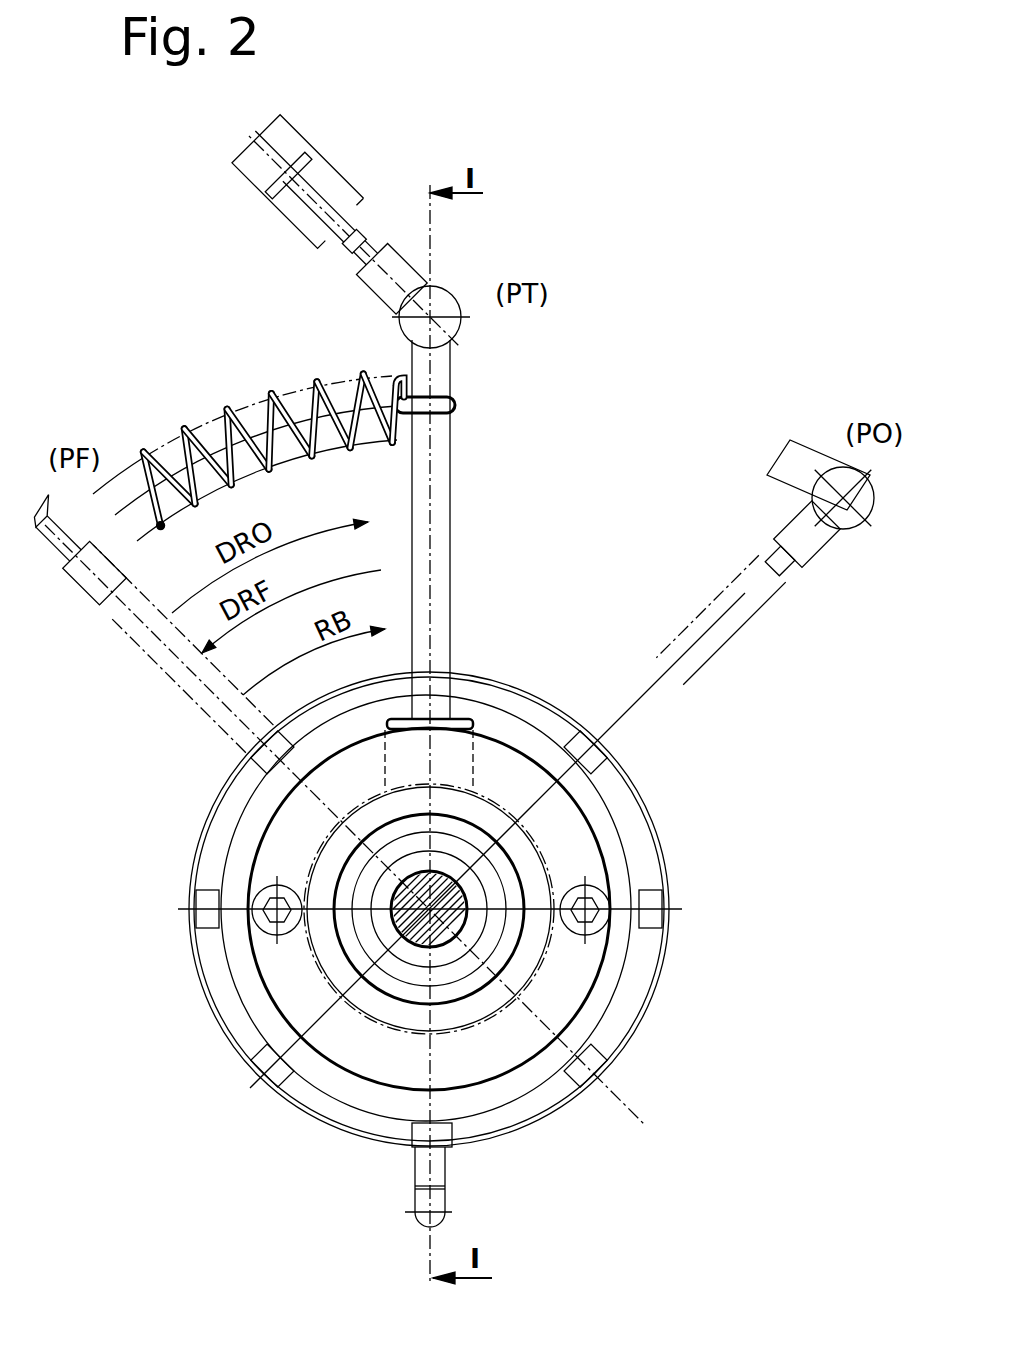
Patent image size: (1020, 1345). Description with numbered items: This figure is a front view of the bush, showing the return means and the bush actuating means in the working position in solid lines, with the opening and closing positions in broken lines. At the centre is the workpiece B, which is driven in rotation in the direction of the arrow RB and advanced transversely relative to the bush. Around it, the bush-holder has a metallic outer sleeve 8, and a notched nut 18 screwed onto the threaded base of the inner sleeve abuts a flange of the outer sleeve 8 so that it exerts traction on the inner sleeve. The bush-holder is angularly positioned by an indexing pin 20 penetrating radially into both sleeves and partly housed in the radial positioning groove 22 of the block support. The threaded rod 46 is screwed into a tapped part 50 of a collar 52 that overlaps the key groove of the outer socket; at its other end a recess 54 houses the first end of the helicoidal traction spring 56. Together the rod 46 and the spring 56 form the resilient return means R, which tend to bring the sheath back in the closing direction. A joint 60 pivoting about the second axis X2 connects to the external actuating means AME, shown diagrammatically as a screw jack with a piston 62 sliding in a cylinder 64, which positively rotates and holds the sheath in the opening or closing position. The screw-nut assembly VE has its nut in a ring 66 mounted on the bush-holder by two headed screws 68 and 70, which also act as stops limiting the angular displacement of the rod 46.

The outer sleeve 8 is at (492, 992).
The notched nut 18 is at (653, 965).
The indexing pin 20 is at (438, 1167).
The radial positioning groove 22 is at (425, 1220).
The threaded rod 46 is at (438, 502).
The tapped part 50 is at (470, 716).
The collar 52 is at (500, 1010).
The recess 54 is at (458, 407).
The helicoidal traction spring 56 is at (272, 393).
The joint 60 is at (443, 293).
The piston 62 is at (331, 218).
The cylinder 64 is at (299, 182).
The ring 66 is at (339, 1036).
The headed screw 68 is at (260, 920).
The headed screw 70 is at (592, 898).
The workpiece B is at (450, 925).
The screw-nut assembly VE is at (238, 848).
The second longitudinal axis of rotation X2 is at (452, 338).
The return means R is at (575, 318).
The external actuating means AME is at (326, 229).